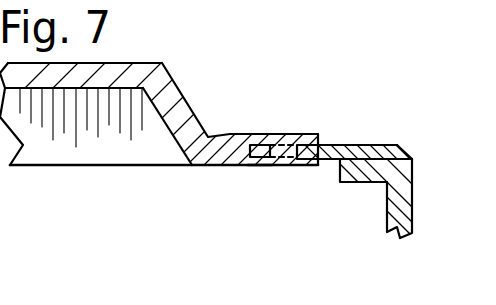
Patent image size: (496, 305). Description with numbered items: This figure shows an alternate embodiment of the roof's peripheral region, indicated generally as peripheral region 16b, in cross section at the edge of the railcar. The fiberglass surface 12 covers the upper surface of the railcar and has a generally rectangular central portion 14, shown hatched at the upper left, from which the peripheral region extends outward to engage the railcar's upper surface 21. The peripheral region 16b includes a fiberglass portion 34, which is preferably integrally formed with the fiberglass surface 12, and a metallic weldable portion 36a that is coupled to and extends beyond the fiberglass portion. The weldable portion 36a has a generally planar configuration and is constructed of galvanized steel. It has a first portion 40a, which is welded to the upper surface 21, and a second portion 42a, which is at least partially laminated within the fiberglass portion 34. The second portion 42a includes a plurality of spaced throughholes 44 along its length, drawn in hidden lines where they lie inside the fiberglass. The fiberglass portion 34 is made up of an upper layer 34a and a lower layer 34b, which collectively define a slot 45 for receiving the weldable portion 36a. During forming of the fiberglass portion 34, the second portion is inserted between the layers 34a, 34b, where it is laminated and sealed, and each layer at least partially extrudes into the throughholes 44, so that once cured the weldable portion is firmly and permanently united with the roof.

The central portion 14 is at (125, 63).
The fiberglass surface 12 is at (214, 128).
The fiberglass portion 34 is at (224, 163).
The upper layer 34a is at (279, 135).
The lower layer 34b is at (310, 167).
The peripheral region 16b is at (309, 128).
The slot 45 is at (257, 145).
The throughholes 44 is at (295, 160).
The second portion 42a is at (258, 164).
The weldable portion 36a is at (340, 142).
The first portion 40a is at (437, 131).
The upper surface 21 is at (414, 205).